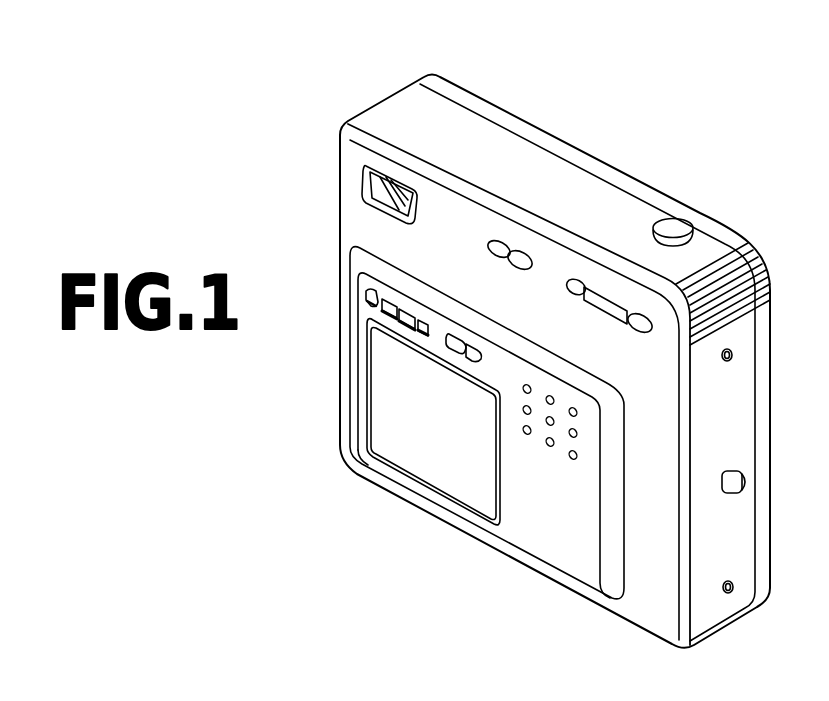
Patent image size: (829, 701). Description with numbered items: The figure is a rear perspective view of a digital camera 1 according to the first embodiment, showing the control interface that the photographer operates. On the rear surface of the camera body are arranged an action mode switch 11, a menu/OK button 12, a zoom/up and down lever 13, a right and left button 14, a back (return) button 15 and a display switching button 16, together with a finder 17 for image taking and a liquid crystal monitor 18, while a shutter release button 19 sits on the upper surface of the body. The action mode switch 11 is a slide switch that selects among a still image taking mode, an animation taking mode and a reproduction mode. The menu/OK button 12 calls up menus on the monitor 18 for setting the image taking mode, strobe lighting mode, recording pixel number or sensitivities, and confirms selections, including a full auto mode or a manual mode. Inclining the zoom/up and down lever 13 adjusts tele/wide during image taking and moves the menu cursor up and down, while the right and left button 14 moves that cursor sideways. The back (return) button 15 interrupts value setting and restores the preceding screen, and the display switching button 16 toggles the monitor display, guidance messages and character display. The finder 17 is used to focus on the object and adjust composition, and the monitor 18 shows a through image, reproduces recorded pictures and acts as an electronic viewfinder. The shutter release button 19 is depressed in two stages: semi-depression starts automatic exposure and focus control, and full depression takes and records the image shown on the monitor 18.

The digital camera 1 is at (562, 83).
The action mode switch 11 is at (462, 356).
The menu/OK button 12 is at (410, 330).
The zoom/up and down lever 13 is at (613, 293).
The right and left button 14 is at (580, 283).
The back (return) button 15 is at (384, 316).
The display switching button 16 is at (366, 292).
The finder 17 is at (340, 167).
The liquid crystal monitor 18 is at (393, 430).
The shutter release button 19 is at (676, 228).